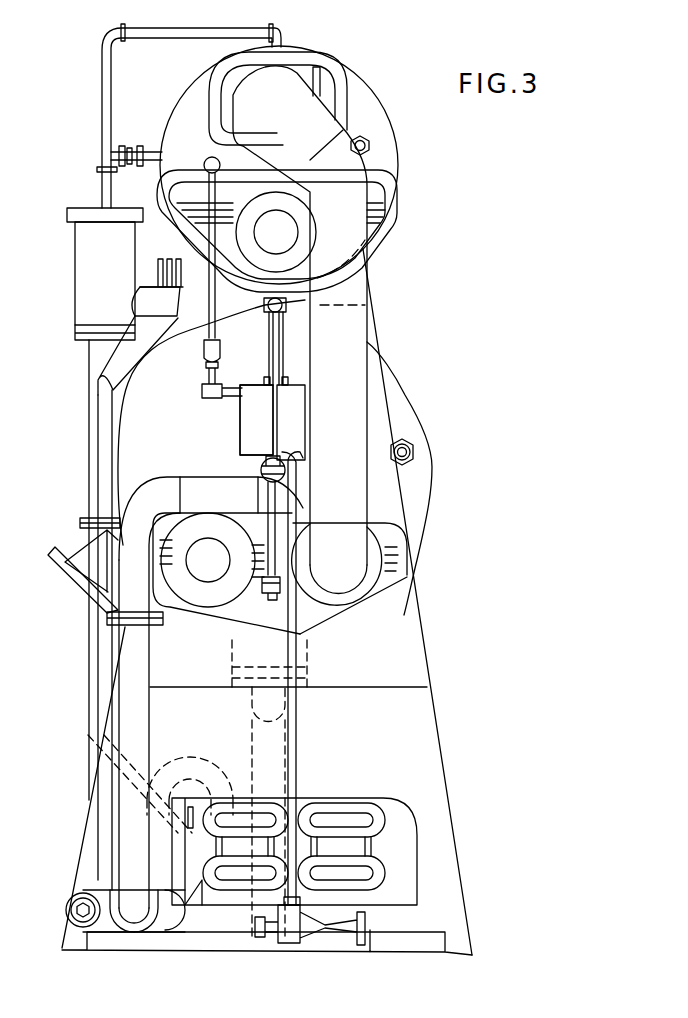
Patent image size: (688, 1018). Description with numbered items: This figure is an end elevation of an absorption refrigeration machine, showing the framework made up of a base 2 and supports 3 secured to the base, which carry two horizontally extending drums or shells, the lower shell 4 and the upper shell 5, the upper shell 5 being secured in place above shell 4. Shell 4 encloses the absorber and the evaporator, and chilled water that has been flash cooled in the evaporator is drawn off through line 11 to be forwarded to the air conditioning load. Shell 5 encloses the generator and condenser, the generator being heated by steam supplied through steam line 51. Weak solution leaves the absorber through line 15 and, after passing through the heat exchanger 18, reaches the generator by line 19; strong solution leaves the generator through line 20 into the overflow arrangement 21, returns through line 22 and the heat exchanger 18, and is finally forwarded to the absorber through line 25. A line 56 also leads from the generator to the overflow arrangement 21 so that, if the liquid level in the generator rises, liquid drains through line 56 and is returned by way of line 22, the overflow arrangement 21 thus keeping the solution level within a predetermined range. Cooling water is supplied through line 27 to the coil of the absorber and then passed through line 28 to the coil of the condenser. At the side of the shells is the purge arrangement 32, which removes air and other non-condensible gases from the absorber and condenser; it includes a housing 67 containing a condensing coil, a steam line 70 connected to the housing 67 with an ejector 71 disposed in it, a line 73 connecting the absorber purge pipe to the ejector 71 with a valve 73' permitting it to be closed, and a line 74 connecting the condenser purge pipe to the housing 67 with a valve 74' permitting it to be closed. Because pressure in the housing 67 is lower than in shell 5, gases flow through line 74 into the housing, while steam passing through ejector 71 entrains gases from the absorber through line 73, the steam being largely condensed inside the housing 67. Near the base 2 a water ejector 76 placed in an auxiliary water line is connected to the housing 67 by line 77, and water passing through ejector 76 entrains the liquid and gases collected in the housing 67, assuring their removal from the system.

The base 2 is at (217, 942).
The supports 3 is at (370, 342).
The shell 4 is at (393, 408).
The shell 5 is at (378, 126).
The line 11 is at (78, 575).
The line 15 is at (257, 742).
The heat exchanger 18 is at (340, 820).
The line 19 is at (100, 455).
The line 20 is at (157, 287).
The overflow arrangement 21 is at (88, 277).
The line 22 is at (98, 363).
The line 25 is at (138, 712).
The line 27 is at (191, 600).
The line 28 is at (356, 375).
The purge arrangement 32 is at (243, 422).
The steam line 51 is at (265, 262).
The line 56 is at (156, 153).
The housing 67 is at (249, 398).
The steam line 70 is at (283, 364).
The ejector 71 is at (272, 313).
The line 73 is at (277, 456).
The valve 73' is at (247, 467).
The line 74 is at (219, 255).
The valve 74' is at (201, 369).
The water ejector 76 is at (294, 940).
The line 77 is at (294, 736).